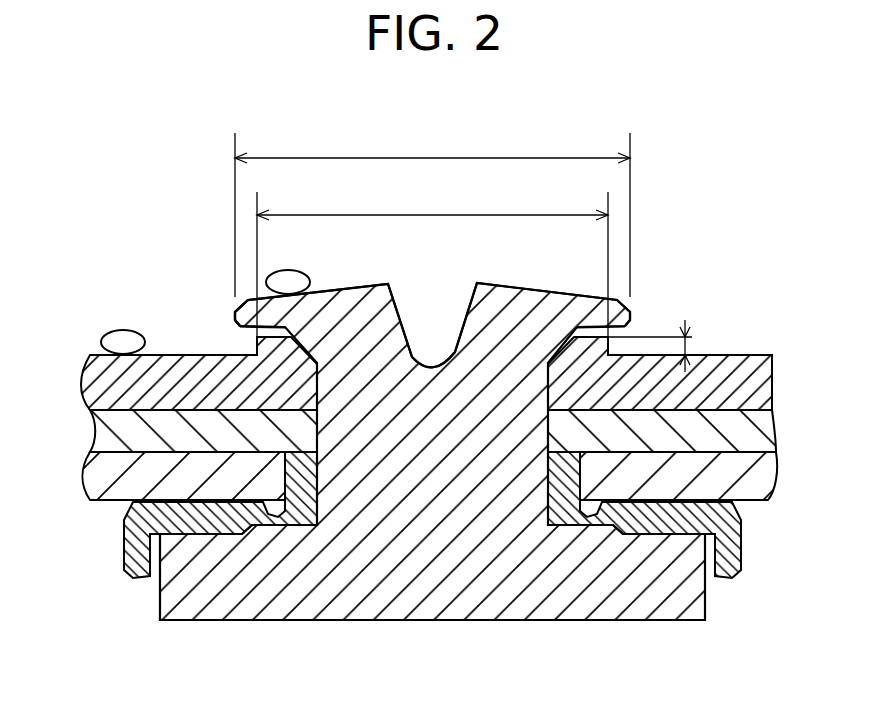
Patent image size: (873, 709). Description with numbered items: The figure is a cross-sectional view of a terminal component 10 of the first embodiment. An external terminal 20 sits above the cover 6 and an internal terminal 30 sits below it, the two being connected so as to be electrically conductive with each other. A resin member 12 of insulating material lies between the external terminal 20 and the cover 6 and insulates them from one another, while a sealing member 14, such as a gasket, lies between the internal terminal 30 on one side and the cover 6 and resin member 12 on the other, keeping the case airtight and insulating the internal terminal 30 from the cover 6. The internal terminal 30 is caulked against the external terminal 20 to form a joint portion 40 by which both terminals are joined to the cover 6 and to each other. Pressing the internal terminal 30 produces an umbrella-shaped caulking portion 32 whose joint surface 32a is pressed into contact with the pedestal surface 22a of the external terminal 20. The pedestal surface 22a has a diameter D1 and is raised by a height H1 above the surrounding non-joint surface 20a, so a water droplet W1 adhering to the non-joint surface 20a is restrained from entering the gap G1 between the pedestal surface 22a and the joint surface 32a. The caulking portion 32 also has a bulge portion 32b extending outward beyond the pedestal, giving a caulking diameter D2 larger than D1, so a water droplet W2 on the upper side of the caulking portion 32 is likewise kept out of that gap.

The terminal component 10 is at (663, 198).
The cover 6 is at (97, 477).
The resin member 12 is at (92, 438).
The sealing member 14 is at (132, 548).
The external terminal 20 is at (90, 385).
The non-joint surface 20a is at (163, 362).
The pedestal surface 22a is at (358, 287).
The internal terminal 30 is at (638, 612).
The caulking portion 32 is at (527, 300).
The joint surface 32a is at (245, 327).
The bulge portion 32b is at (242, 312).
The joint portion 40 is at (638, 293).
The water droplet W1 is at (120, 338).
The water droplet W2 is at (288, 274).
The gap G1 is at (617, 337).
The height H1 is at (704, 346).
The diameter of pedestal surface D1 is at (432, 250).
The caulking diameter D2 is at (432, 214).